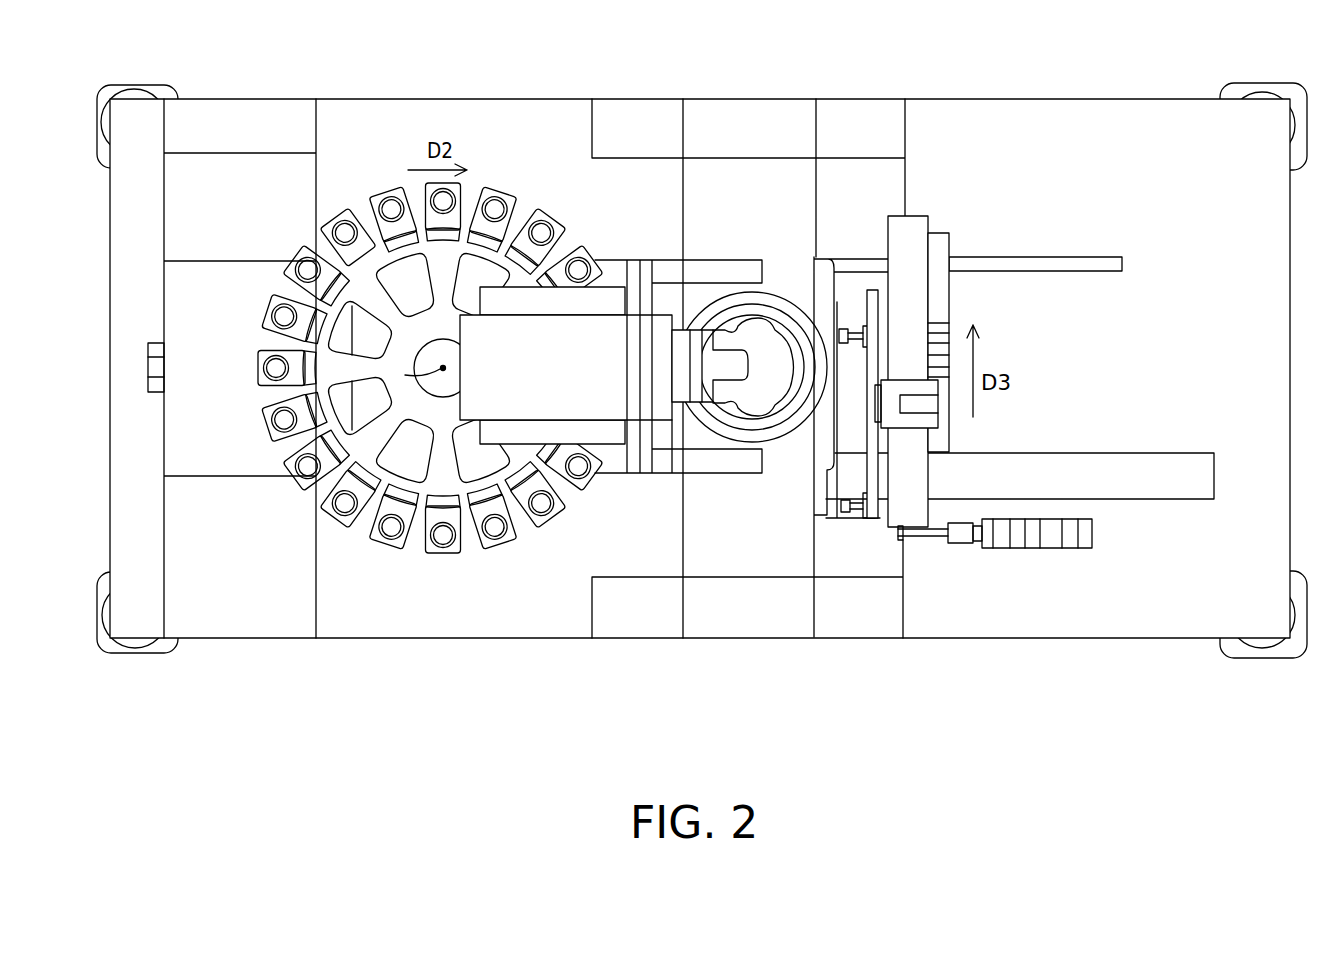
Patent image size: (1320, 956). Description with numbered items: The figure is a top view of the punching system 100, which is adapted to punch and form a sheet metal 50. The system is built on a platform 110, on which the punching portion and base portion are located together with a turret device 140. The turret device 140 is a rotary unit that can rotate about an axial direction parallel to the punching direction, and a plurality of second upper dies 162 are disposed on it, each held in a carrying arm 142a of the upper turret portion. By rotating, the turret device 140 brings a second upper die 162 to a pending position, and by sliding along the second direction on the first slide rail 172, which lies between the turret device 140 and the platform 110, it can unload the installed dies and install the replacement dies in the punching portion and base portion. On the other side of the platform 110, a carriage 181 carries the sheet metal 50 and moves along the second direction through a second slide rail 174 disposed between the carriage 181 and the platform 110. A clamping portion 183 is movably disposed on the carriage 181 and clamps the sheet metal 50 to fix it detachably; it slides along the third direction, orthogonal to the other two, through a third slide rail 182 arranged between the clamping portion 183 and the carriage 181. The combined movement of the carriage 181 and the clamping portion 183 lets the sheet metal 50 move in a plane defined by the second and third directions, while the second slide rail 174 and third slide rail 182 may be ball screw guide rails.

The punching system 100 is at (200, 700).
The platform 110 is at (355, 608).
The turret device 140 is at (422, 568).
The carrying arm 142a is at (456, 518).
The second upper die 162 is at (343, 228).
The first slide rail 172 is at (608, 462).
The sheet metal 50 is at (821, 491).
The second slide rail 174 is at (1080, 265).
The carriage 181 is at (939, 238).
The third slide rail 182 is at (896, 226).
The clamping portion 183 is at (903, 420).